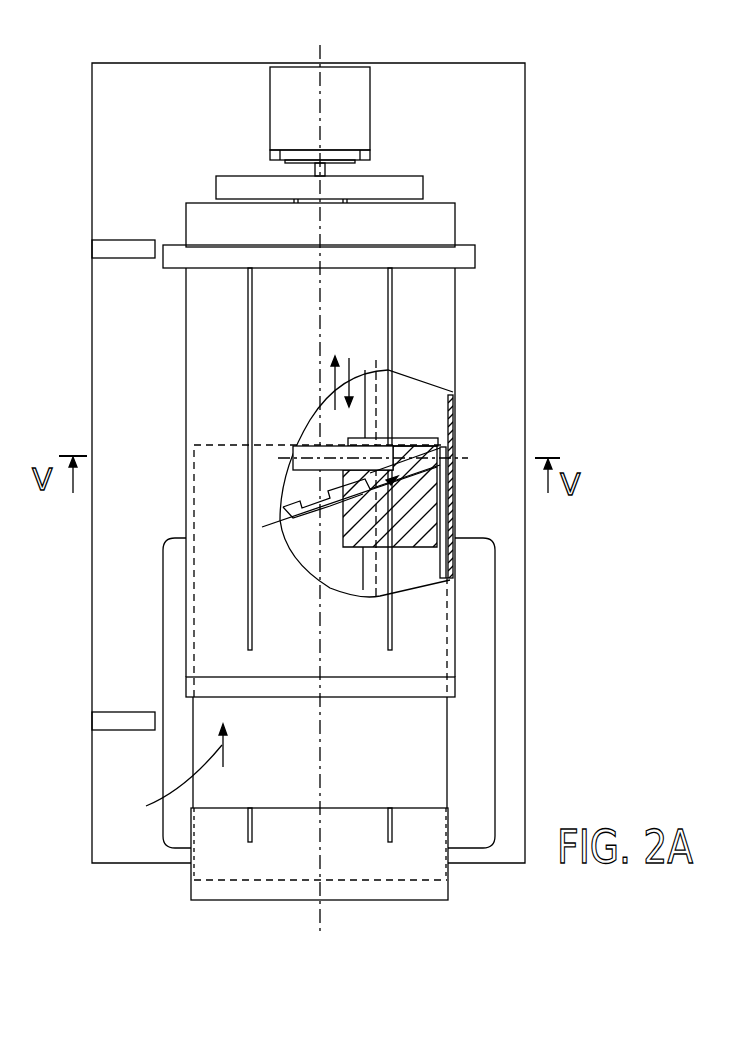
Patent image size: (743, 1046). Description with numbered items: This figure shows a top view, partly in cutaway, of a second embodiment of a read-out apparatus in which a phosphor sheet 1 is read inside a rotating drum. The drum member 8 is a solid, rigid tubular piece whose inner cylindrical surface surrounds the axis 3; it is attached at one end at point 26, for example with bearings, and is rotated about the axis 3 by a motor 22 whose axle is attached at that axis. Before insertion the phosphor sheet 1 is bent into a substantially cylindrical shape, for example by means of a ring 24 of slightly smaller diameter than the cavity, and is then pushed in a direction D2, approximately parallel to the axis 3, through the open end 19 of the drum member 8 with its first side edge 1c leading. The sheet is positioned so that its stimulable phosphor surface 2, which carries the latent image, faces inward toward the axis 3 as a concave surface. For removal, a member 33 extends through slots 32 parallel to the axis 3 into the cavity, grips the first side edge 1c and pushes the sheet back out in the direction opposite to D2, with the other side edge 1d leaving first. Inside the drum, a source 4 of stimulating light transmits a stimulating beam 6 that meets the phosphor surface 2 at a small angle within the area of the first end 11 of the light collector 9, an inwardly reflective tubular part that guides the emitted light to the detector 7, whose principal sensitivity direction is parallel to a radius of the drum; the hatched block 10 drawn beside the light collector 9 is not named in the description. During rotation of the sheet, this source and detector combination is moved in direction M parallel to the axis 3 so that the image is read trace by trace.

The phosphor sheet 1 is at (402, 772).
The first side edge 1c is at (226, 439).
The other side edge 1d is at (308, 888).
The stimulable phosphor surface 2 is at (430, 559).
The axis 3 is at (323, 830).
The source of stimulating light 4 is at (325, 513).
The stimulating light beam 6 is at (395, 481).
The detector for emitted light 7 is at (355, 452).
The drum member 8 is at (226, 375).
The light collector 9 is at (411, 438).
The block 10 is at (426, 529).
The first end of the light collector 11 is at (447, 452).
The open end of the drum member 19 is at (448, 709).
The motor 22 is at (310, 116).
The ring 24 is at (448, 887).
The attachment point 26 is at (344, 172).
The slots 32 is at (246, 317).
The member 33 is at (424, 253).
The direction M is at (343, 368).
The direction D2 is at (167, 772).